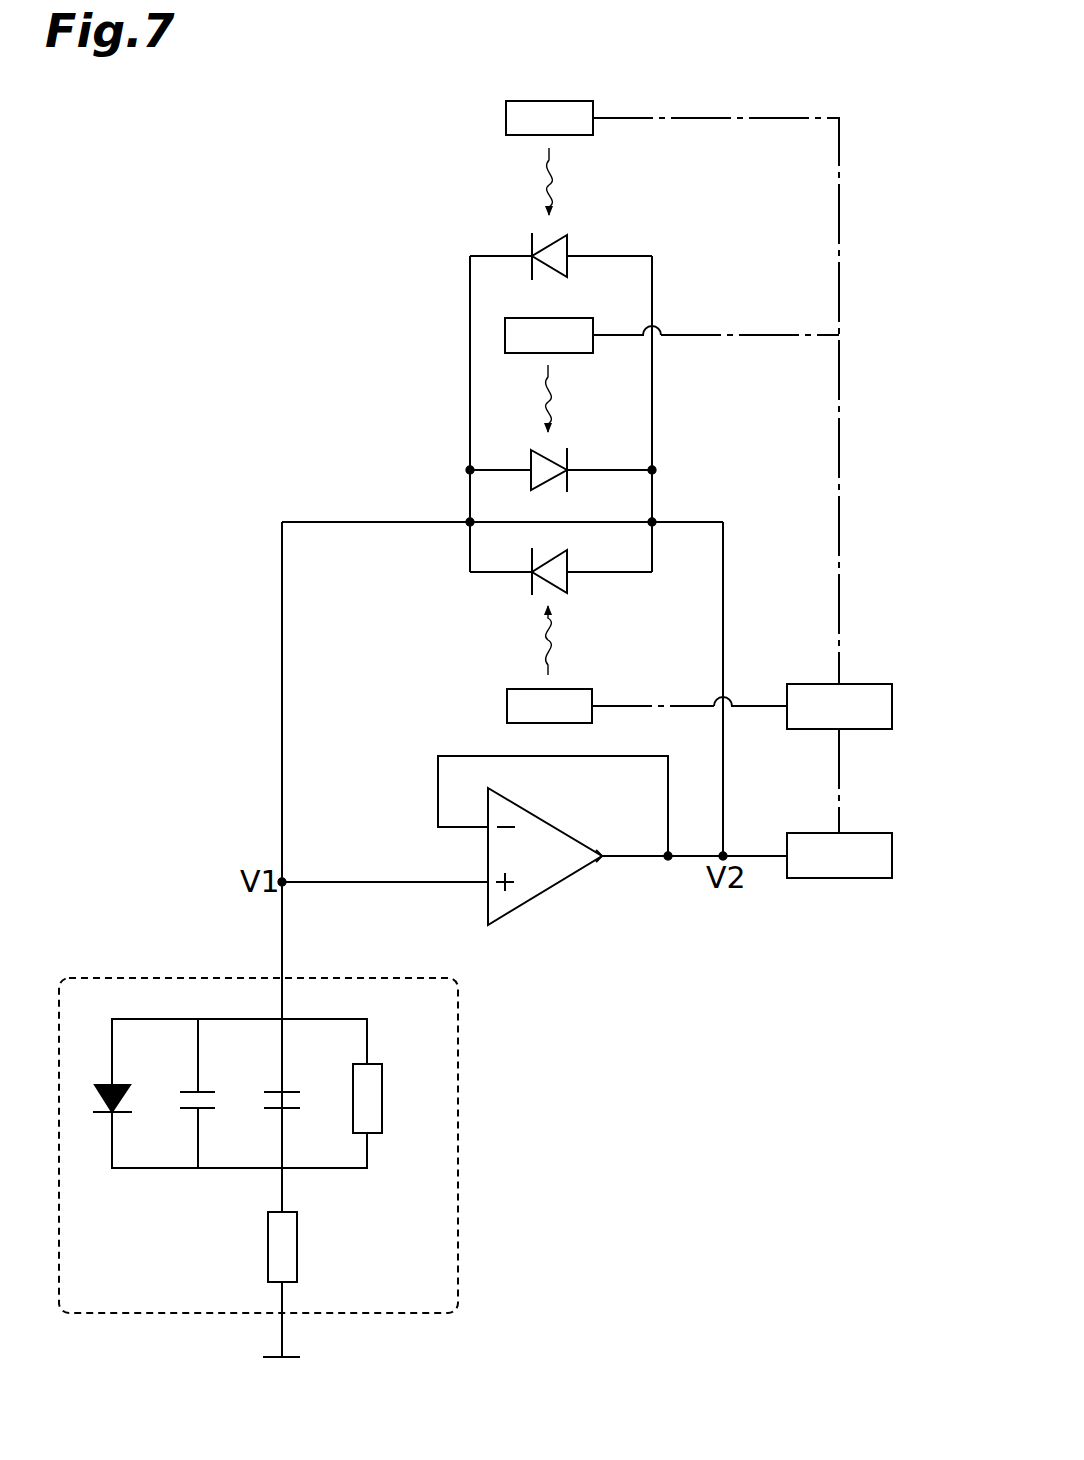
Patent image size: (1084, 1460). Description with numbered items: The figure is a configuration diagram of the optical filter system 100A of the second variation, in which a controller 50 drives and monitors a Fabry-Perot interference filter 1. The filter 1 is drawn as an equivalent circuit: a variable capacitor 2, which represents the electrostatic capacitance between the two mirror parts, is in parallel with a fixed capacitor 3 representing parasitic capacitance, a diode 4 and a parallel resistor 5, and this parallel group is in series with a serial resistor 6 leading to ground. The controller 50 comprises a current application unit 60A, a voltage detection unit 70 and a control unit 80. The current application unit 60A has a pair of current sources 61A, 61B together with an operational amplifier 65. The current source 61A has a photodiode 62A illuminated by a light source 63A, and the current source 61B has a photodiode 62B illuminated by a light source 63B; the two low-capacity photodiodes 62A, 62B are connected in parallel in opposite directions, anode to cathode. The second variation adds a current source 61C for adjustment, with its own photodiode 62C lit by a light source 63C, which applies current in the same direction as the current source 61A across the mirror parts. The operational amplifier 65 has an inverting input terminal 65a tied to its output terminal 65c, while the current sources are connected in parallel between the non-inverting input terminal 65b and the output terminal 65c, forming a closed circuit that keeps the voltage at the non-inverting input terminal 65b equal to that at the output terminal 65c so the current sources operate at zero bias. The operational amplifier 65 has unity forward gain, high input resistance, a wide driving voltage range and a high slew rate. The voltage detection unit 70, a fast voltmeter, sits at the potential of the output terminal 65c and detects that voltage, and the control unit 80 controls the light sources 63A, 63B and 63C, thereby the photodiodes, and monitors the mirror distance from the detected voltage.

The optical filter system 100A is at (950, 60).
The current application unit 60A is at (368, 104).
The controller 50 is at (693, 108).
The current source 61C is at (412, 138).
The light source 63C is at (506, 120).
The photodiode 62C is at (528, 250).
The current source 61B is at (392, 358).
The light source 63B is at (505, 336).
The photodiode 62B is at (528, 465).
The current source 61A is at (412, 603).
The photodiode 62A is at (528, 580).
The light source 63A is at (507, 706).
The control unit 80 is at (892, 698).
The voltage detection unit 70 is at (892, 847).
The operational amplifier 65 is at (535, 900).
The inverting input terminal 65a is at (486, 830).
The non-inverting input terminal 65b is at (486, 885).
The output terminal 65c is at (602, 860).
The Fabry-Perot interference filter 1 is at (458, 1042).
The variable capacitor 2 is at (293, 1090).
The fixed capacitor 3 is at (202, 1090).
The diode 4 is at (122, 1083).
The parallel resistor 5 is at (382, 1075).
The serial resistor 6 is at (297, 1240).